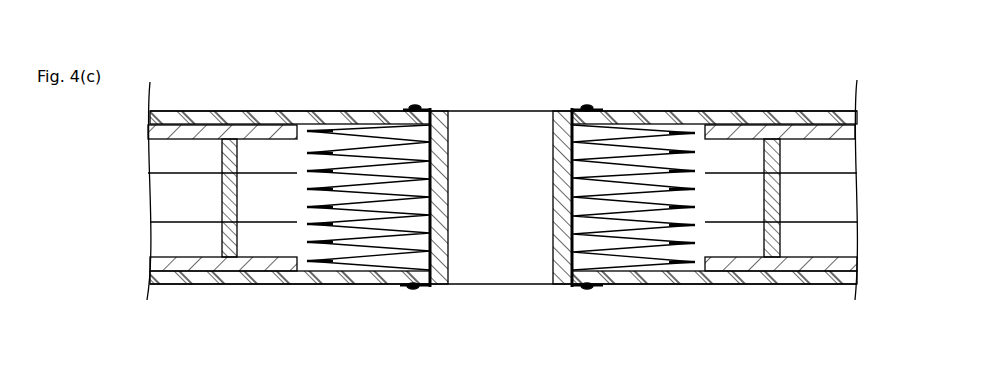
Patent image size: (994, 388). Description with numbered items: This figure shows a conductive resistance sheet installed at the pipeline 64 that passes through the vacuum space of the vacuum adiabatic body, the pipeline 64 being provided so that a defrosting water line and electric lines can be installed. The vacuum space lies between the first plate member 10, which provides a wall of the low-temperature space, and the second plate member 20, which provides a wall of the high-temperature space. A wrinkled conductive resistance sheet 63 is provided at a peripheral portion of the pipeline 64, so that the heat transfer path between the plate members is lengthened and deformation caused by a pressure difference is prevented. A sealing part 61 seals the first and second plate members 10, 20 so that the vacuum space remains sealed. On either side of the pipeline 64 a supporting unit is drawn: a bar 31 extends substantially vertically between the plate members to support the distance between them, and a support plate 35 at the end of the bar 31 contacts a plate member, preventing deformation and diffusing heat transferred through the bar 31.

The first plate member 10 is at (687, 286).
The second plate member 20 is at (652, 123).
The bar 31 is at (757, 143).
The support plate 35 is at (782, 263).
The sealing part 61 is at (414, 107).
The wrinkled conductive resistance sheet 63 is at (360, 130).
The pipeline 64 is at (552, 138).